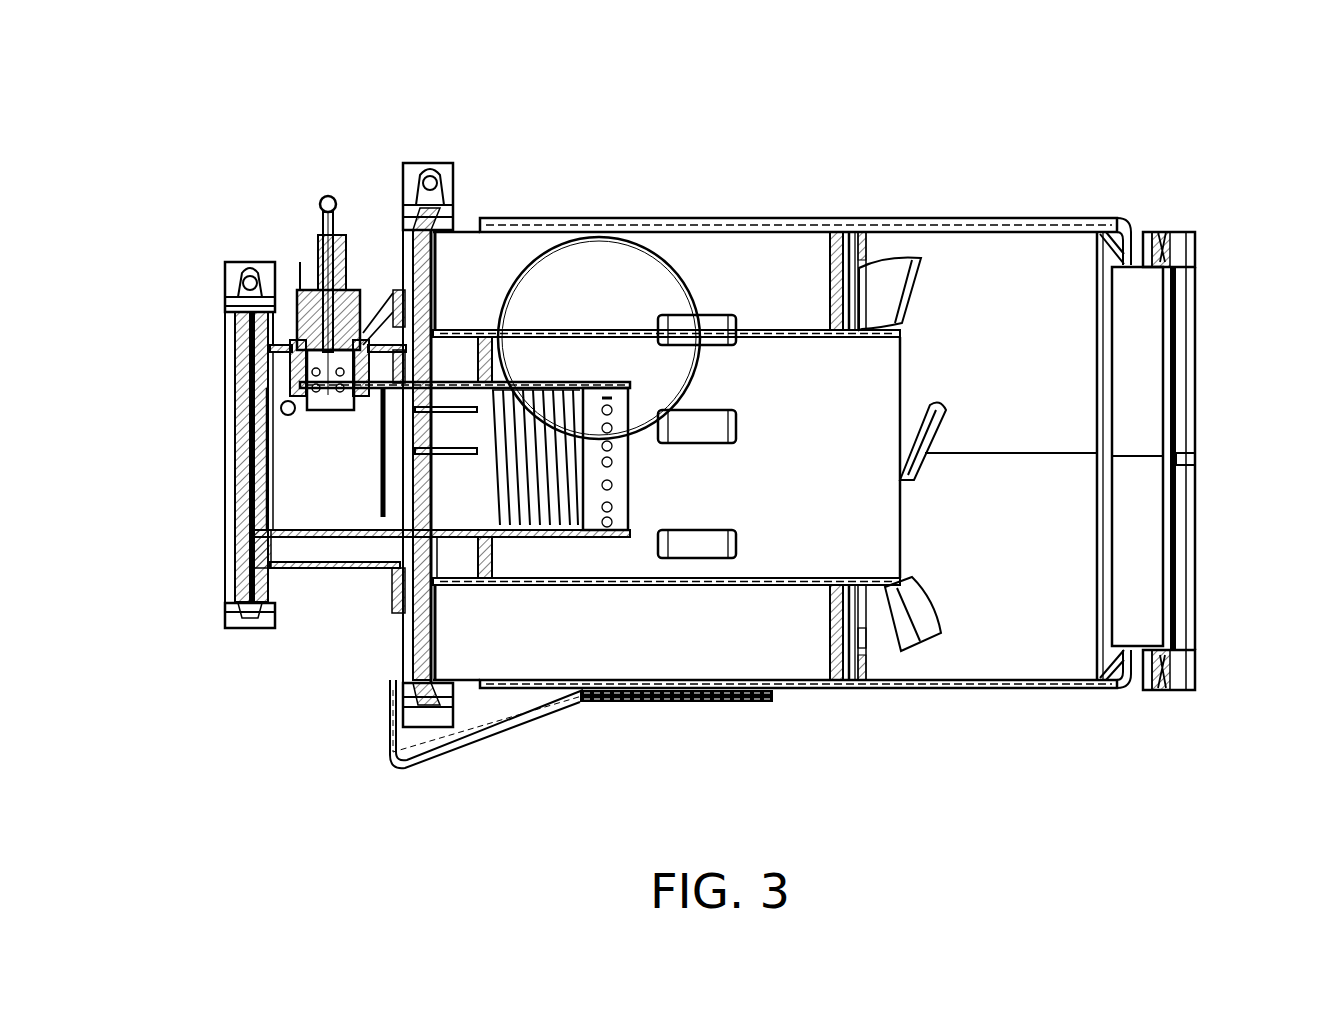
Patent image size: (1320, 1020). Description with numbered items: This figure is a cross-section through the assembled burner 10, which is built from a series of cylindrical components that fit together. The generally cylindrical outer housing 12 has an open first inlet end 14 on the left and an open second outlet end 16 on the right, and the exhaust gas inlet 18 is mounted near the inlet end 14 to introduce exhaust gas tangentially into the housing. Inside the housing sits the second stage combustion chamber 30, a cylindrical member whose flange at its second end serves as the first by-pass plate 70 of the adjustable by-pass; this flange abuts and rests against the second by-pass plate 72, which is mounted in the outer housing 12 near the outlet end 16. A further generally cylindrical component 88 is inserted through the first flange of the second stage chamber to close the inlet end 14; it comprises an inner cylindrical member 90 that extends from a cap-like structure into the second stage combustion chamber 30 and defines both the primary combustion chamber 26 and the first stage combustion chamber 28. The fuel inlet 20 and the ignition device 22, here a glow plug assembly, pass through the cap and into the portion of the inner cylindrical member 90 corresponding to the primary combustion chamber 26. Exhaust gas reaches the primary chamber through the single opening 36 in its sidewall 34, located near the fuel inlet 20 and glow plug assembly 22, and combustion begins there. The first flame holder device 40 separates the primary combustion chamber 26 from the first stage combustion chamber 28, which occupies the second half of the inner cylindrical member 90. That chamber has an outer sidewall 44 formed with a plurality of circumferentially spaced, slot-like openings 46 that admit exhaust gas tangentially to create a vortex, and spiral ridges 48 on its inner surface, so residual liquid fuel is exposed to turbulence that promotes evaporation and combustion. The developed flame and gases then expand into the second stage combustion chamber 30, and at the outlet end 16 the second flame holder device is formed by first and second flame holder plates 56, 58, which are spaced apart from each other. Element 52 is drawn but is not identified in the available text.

The burner 10 is at (1152, 128).
The outer housing 12 is at (997, 218).
The first inlet end 14 is at (412, 162).
The second outlet end 16 is at (1151, 232).
The exhaust gas inlet 18 is at (690, 300).
The fuel inlet 20 is at (284, 279).
The ignition device 22 is at (308, 265).
The primary combustion chamber 26 is at (348, 471).
The first stage combustion chamber 28 is at (458, 507).
The second stage combustion chamber 30 is at (770, 330).
The sidewall 34 is at (290, 550).
The opening 36 is at (283, 412).
The first flame holder device 40 is at (383, 480).
The outer sidewall 44 is at (553, 388).
The circumferentially spaced opening 46 is at (427, 452).
The spiral ridges 48 is at (515, 483).
The mounting block 52 is at (728, 315).
The first flame holder plate 56 is at (1096, 596).
The second flame holder plate 58 is at (1197, 571).
The first by-pass plate 70 is at (830, 655).
The second by-pass plate 72 is at (867, 670).
The cylindrical component 88 is at (213, 253).
The inner cylindrical member 90 is at (443, 540).